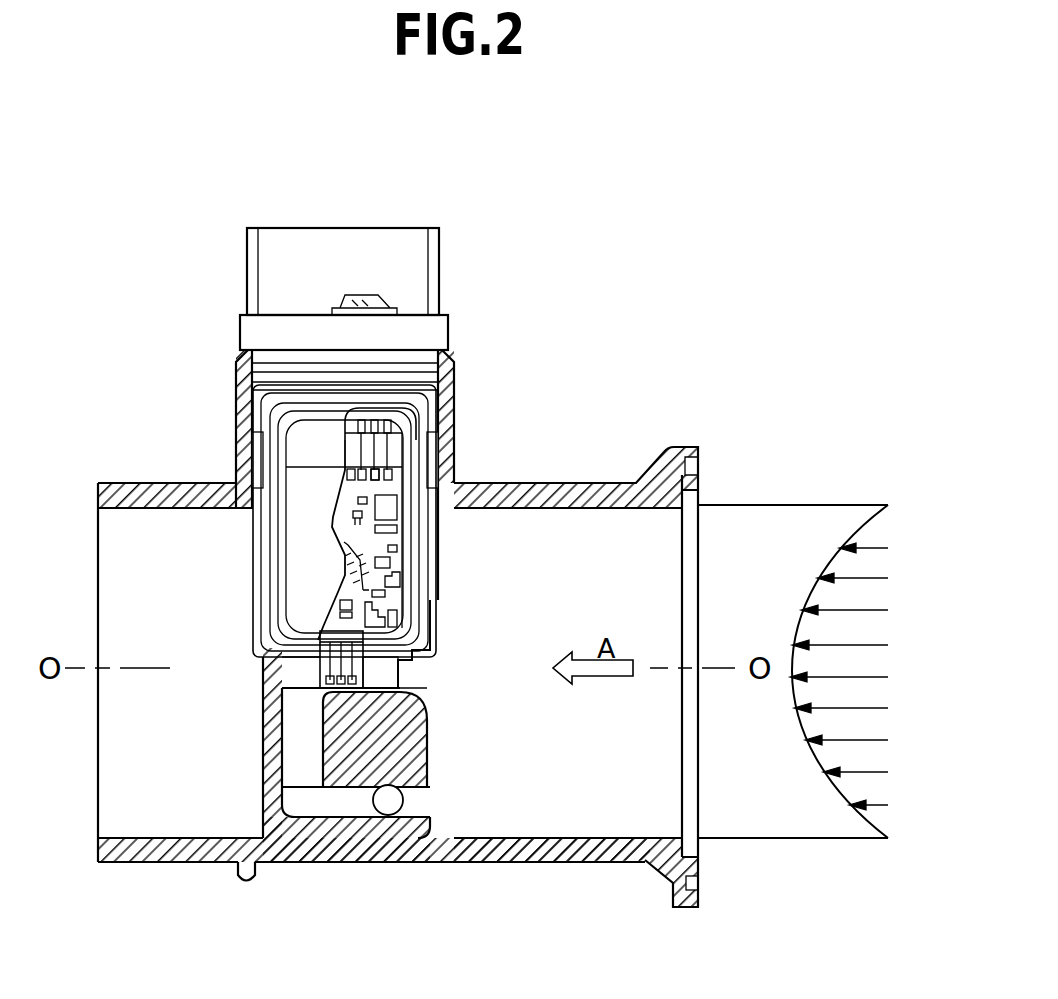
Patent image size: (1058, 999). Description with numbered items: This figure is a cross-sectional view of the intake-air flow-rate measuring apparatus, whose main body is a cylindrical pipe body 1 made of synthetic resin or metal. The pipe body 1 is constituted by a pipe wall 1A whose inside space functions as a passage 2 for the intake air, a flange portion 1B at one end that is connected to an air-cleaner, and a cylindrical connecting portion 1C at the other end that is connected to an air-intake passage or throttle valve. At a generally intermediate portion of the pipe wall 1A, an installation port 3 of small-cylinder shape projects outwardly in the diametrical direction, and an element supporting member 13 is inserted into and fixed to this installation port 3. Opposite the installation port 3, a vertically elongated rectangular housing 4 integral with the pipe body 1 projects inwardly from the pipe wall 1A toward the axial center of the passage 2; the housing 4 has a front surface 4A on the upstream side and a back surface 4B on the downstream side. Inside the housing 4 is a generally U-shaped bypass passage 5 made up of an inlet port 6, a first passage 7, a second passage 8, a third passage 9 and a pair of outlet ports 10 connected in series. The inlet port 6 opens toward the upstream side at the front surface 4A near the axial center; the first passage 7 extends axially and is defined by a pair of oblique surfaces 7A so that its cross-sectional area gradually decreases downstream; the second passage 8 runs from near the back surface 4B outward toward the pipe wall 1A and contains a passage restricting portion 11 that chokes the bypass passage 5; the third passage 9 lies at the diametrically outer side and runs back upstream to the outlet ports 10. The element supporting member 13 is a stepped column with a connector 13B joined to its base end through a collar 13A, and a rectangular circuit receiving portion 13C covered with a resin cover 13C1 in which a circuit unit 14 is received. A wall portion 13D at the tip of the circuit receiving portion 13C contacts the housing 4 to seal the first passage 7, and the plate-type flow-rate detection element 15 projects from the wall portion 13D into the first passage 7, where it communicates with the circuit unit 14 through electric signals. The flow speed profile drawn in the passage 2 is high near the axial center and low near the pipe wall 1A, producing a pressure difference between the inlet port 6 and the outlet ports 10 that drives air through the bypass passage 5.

The pipe body 1 is at (585, 490).
The pipe wall 1A is at (546, 855).
The flange portion 1B is at (674, 906).
The connecting portion 1C is at (118, 855).
The passage 2 is at (668, 797).
The installation port 3 is at (236, 372).
The housing 4 is at (412, 745).
The front surface 4A is at (432, 788).
The back surface 4B is at (262, 785).
The bypass passage 5 is at (298, 710).
The inlet port 6 is at (385, 668).
The first passage 7 is at (305, 675).
The oblique surfaces 7A is at (403, 687).
The second passage 8 is at (295, 765).
The third passage 9 is at (320, 808).
The outlet ports 10 is at (388, 803).
The passage restricting portion 11 is at (295, 740).
The element supporting member 13 is at (394, 251).
The collar 13A is at (432, 330).
The connector 13B is at (385, 240).
The circuit receiving portion 13C is at (402, 425).
The cover 13C1 is at (305, 492).
The wall portion 13D is at (432, 636).
The circuit unit 14 is at (392, 478).
The plate-type flow-rate detection element 15 is at (295, 663).